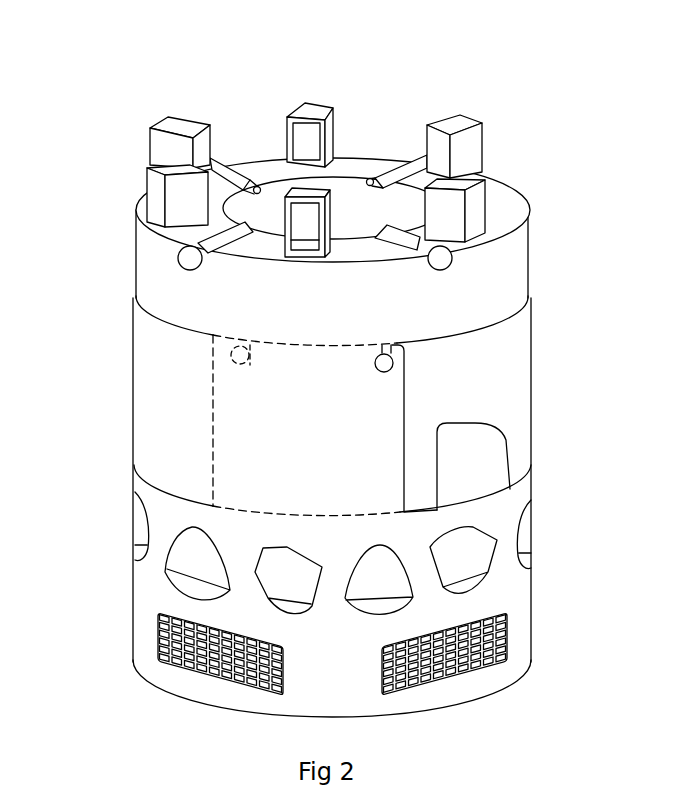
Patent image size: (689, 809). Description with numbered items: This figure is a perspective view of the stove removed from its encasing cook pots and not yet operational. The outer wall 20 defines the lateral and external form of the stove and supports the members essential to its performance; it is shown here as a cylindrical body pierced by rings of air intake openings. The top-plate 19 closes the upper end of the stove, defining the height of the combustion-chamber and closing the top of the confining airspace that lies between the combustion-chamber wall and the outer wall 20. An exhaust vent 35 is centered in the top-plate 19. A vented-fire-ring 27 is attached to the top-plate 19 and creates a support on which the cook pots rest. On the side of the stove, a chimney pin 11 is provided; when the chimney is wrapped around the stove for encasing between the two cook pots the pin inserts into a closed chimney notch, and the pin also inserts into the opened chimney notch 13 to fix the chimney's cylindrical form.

The chimney pin 11 is at (400, 362).
The opened chimney notch 13 is at (230, 362).
The top-plate 19 is at (527, 200).
The outer wall 20 is at (150, 277).
The vented-fire-ring 27 is at (478, 137).
The exhaust vent 35 is at (343, 188).